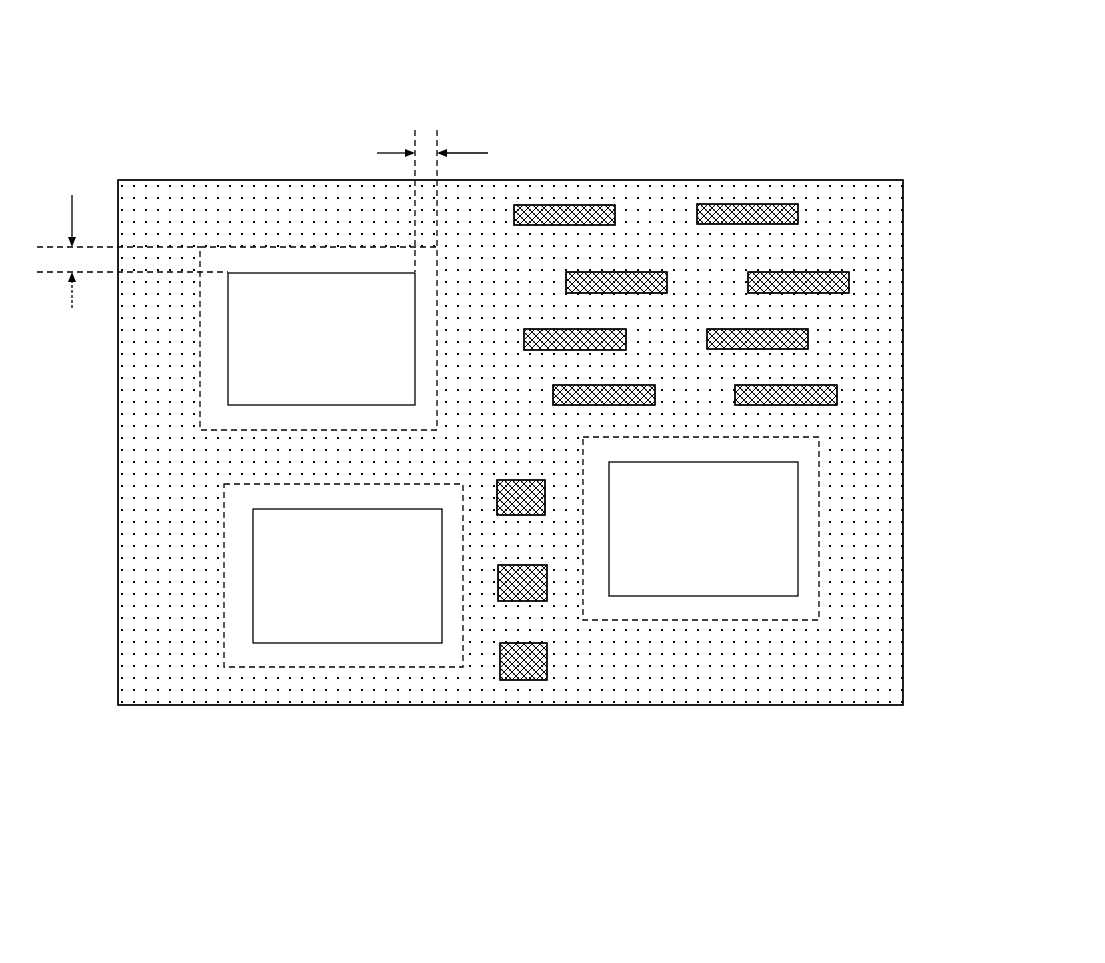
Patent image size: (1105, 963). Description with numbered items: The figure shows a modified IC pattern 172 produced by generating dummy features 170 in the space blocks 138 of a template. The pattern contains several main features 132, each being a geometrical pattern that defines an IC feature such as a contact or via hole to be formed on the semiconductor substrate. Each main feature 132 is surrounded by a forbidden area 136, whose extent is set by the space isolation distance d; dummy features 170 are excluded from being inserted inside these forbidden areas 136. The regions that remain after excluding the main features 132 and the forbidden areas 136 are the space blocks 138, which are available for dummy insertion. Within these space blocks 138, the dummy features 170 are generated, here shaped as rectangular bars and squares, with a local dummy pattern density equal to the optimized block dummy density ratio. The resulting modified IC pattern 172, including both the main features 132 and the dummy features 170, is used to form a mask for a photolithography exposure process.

The modified IC pattern 172 is at (1041, 78).
The space block 138 is at (880, 276).
The forbidden area 136 is at (216, 412).
The main feature 132 is at (304, 345).
The dummy feature 170 is at (552, 218).